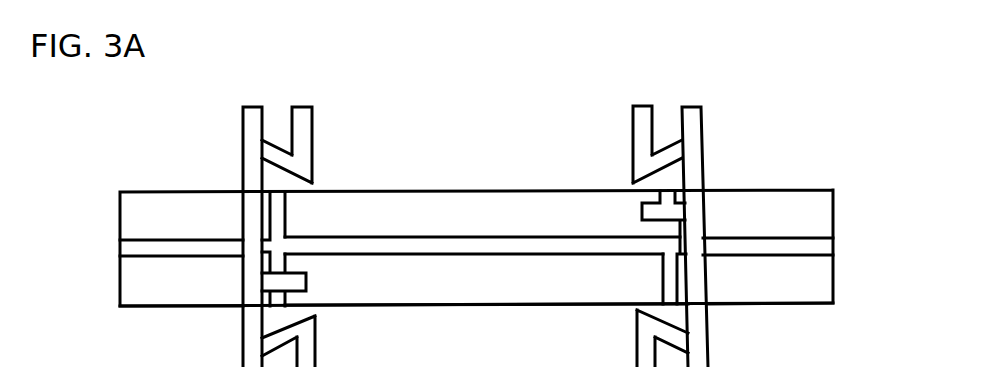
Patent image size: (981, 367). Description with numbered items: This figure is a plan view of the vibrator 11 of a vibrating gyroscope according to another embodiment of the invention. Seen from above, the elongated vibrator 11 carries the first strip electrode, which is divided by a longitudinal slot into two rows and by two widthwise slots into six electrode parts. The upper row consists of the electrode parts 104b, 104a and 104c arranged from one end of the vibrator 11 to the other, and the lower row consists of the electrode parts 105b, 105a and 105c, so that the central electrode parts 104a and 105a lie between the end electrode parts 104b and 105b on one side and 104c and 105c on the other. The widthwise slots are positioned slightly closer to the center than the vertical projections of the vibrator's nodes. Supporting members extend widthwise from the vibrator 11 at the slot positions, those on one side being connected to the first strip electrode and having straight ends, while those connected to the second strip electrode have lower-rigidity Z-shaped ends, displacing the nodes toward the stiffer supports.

The vibrator 11 is at (153, 137).
The electrode part 104a is at (470, 192).
The electrode part 104b is at (192, 193).
The electrode part 104c is at (765, 195).
The electrode part 105a is at (483, 297).
The electrode part 105b is at (202, 298).
The electrode part 105c is at (777, 295).